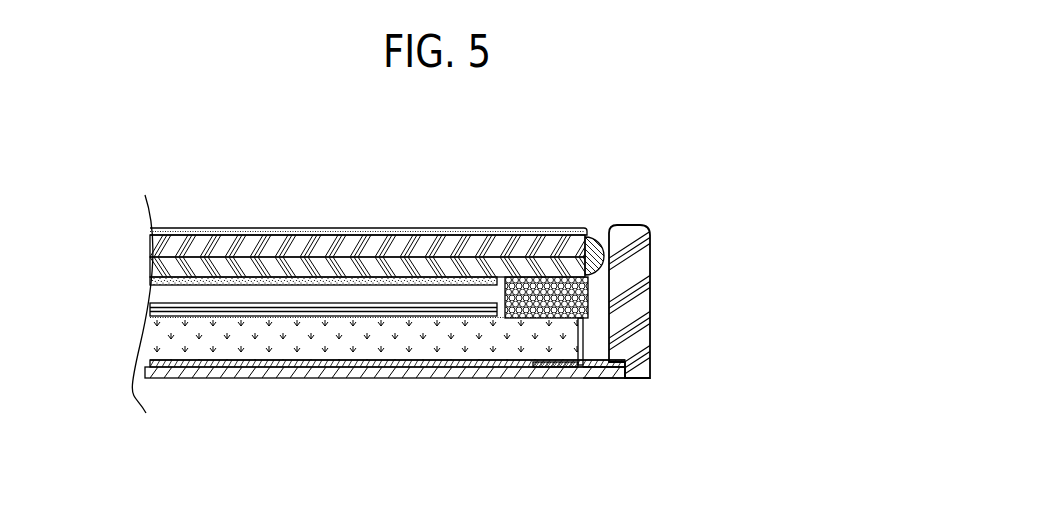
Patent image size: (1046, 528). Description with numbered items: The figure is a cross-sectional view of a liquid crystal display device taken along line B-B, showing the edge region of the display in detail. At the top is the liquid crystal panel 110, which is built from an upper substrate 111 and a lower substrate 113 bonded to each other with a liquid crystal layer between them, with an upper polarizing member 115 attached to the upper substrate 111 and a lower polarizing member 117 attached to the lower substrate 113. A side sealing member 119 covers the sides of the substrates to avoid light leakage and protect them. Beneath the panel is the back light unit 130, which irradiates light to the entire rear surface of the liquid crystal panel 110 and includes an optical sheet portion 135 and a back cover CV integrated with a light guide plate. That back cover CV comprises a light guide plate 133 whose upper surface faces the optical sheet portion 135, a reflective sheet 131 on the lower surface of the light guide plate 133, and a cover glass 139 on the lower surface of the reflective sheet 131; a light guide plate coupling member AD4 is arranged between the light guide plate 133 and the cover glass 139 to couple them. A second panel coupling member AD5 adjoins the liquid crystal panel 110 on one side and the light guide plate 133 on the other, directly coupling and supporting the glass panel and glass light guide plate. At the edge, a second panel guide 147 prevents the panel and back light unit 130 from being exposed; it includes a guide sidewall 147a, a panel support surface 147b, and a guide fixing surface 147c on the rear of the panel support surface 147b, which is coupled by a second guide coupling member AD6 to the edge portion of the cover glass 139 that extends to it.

The liquid crystal panel 110 is at (342, 171).
The upper polarizing member 115 is at (341, 232).
The upper substrate 111 is at (388, 236).
The lower substrate 113 is at (432, 258).
The lower polarizing member 117 is at (470, 280).
The side sealing member 119 is at (597, 237).
The back light unit 130 is at (278, 469).
The optical sheet portion 135 is at (267, 311).
The back cover integrated with a light guide plate CV is at (360, 433).
The light guide plate 133 is at (460, 338).
The cover glass 139 is at (360, 373).
The reflective sheet 131 is at (413, 362).
The light guide plate coupling member AD4 is at (556, 367).
The second panel coupling member AD5 is at (558, 305).
The second guide coupling member AD6 is at (613, 370).
The second panel guide 147 is at (738, 273).
The guide sidewall 147a is at (650, 268).
The panel support surface 147b is at (610, 303).
The guide fixing surface 147c is at (603, 345).
The section line B- B is at (396, 453).